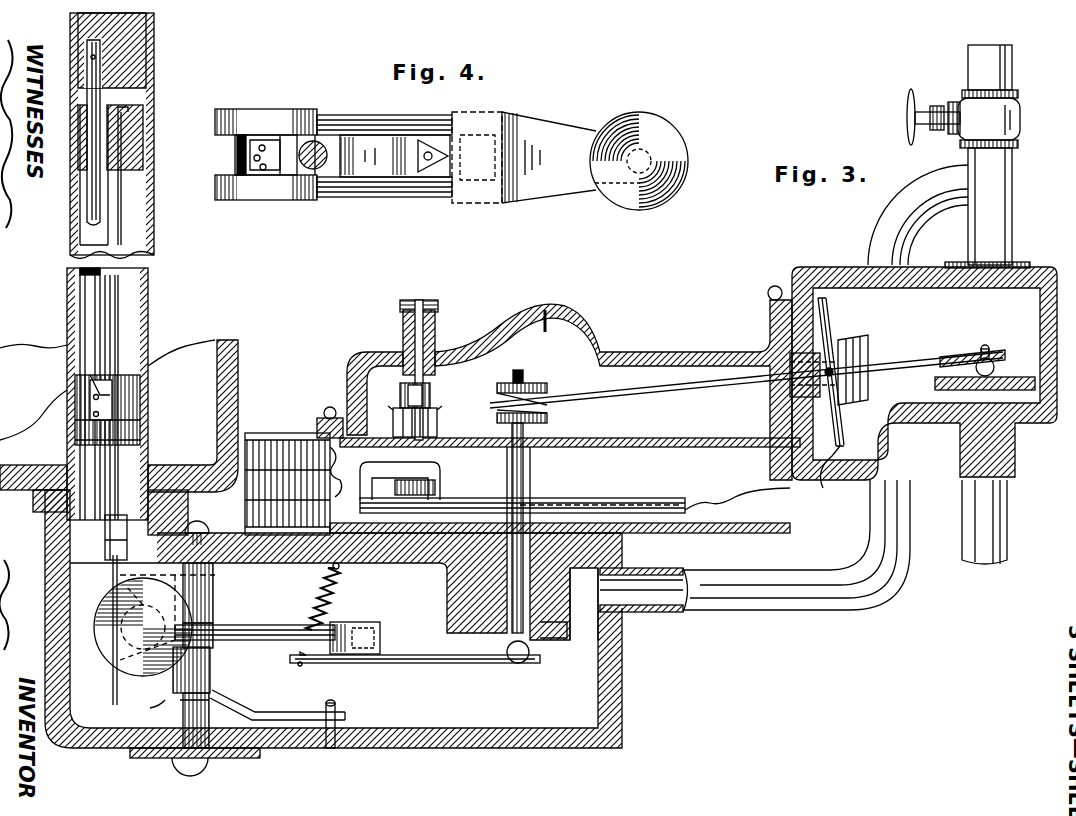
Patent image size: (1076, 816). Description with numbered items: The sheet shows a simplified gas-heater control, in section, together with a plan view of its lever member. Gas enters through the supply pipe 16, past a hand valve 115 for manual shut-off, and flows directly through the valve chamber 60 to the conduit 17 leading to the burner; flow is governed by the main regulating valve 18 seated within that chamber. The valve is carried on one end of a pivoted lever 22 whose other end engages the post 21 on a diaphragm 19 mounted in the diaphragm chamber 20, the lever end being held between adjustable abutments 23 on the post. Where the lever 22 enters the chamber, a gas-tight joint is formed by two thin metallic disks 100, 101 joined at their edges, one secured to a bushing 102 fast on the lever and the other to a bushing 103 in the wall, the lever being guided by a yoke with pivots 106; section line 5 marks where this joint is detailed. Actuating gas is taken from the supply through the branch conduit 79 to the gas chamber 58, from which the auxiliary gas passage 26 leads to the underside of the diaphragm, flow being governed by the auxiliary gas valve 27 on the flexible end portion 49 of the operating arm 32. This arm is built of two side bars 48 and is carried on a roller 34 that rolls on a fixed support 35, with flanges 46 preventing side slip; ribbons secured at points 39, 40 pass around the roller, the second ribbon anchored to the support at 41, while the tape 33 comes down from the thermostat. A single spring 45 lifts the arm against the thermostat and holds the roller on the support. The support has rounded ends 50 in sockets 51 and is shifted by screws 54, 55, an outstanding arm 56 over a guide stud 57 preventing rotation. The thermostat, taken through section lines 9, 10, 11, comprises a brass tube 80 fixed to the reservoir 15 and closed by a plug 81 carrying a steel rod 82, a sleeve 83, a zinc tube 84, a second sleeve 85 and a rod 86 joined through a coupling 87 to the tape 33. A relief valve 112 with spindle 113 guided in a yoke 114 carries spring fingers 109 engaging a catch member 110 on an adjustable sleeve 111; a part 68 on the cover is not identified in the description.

In FIG. 3, the section line 5- 5 is at (775, 372).
In FIG. 3, the section line 9- 9 is at (192, 156).
In FIG. 3, the section line 10- 10 is at (192, 229).
In FIG. 3, the section line 11- 11 is at (194, 399).
In FIG. 3, the water chamber or reservoir 15 is at (240, 381).
In FIG. 3, the gas supply pipe 16 is at (1012, 72).
In FIG. 3, the burner conduit 17 is at (1002, 523).
In FIG. 3, the main regulating valve 18 is at (1018, 377).
In FIG. 3, the diaphragm 19 is at (718, 500).
In FIG. 3, the diaphragm chamber 20 is at (627, 477).
In FIG. 3, the diaphragm post 21 is at (526, 492).
In FIG. 3, the pivoted lever 22 is at (620, 385).
In FIG. 3, the adjustable abutments 23 is at (540, 395).
In FIG. 3, the auxiliary gas passage 26 is at (505, 603).
In FIG. 4, the auxiliary gas valve 27 is at (666, 147).
In FIG. 3, the auxiliary gas valve 27 is at (562, 640).
In FIG. 3, the valve operating arm 32 is at (268, 632).
In FIG. 4, the metallic tape 33 is at (230, 155).
In FIG. 3, the metallic tape 33 is at (113, 576).
In FIG. 4, the roller 34 is at (250, 177).
In FIG. 3, the roller 34 is at (112, 647).
In FIG. 4, the fixed support 35 is at (322, 143).
In FIG. 3, the fixed support 35 is at (213, 606).
In FIG. 3, the ribbon securing point 39 is at (128, 660).
In FIG. 3, the ribbon securing point 40 is at (181, 601).
In FIG. 3, the ribbon anchoring point 41 is at (173, 683).
In FIG. 3, the spring 45 is at (333, 605).
In FIG. 4, the flanges 46 is at (240, 108).
In FIG. 3, the flanges 46 is at (100, 630).
In FIG. 4, the side bars 48 is at (418, 125).
In FIG. 4, the flexible end portion 49 is at (550, 132).
In FIG. 3, the flexible end portion 49 is at (422, 661).
In FIG. 4, the rounded ends 50 is at (320, 172).
In FIG. 3, the rounded ends 50 is at (152, 706).
In FIG. 3, the sockets 51 is at (210, 540).
In FIG. 3, the adjusting screw 54 is at (200, 521).
In FIG. 3, the adjusting screw 55 is at (184, 760).
In FIG. 4, the outstanding arm 56 is at (383, 165).
In FIG. 3, the outstanding arm 56 is at (268, 711).
In FIG. 3, the guide stud 57 is at (337, 702).
In FIG. 3, the gas chamber 58 is at (333, 597).
In FIG. 3, the valve chamber 60 is at (924, 373).
In FIG. 3, the dome cover 68 is at (548, 316).
In FIG. 3, the branch conduit 79 is at (830, 610).
In FIG. 3, the brass tube 80 is at (148, 310).
In FIG. 3, the plug 81 is at (136, 58).
In FIG. 3, the steel rod 82 is at (92, 200).
In FIG. 3, the sleeve 83 is at (143, 420).
In FIG. 3, the zinc tube 84 is at (88, 392).
In FIG. 3, the second sleeve 85 is at (143, 133).
In FIG. 3, the steel rod 86 is at (120, 288).
In FIG. 3, the coupling 87 is at (105, 547).
In FIG. 3, the metallic disk 100 is at (830, 306).
In FIG. 3, the metallic disk 101 is at (823, 477).
In FIG. 3, the bushing 102 is at (868, 348).
In FIG. 3, the bushing 103 is at (790, 392).
In FIG. 3, the pivots 106 is at (852, 342).
In FIG. 3, the spring fingers 109 is at (430, 432).
In FIG. 3, the catch member 110 is at (432, 393).
In FIG. 3, the adjustable sleeve 111 is at (402, 320).
In FIG. 3, the pressure releasing valve 112 is at (440, 487).
In FIG. 3, the spindle 113 is at (395, 481).
In FIG. 3, the yoke 114 is at (385, 468).
In FIG. 3, the hand valve 115 is at (975, 108).